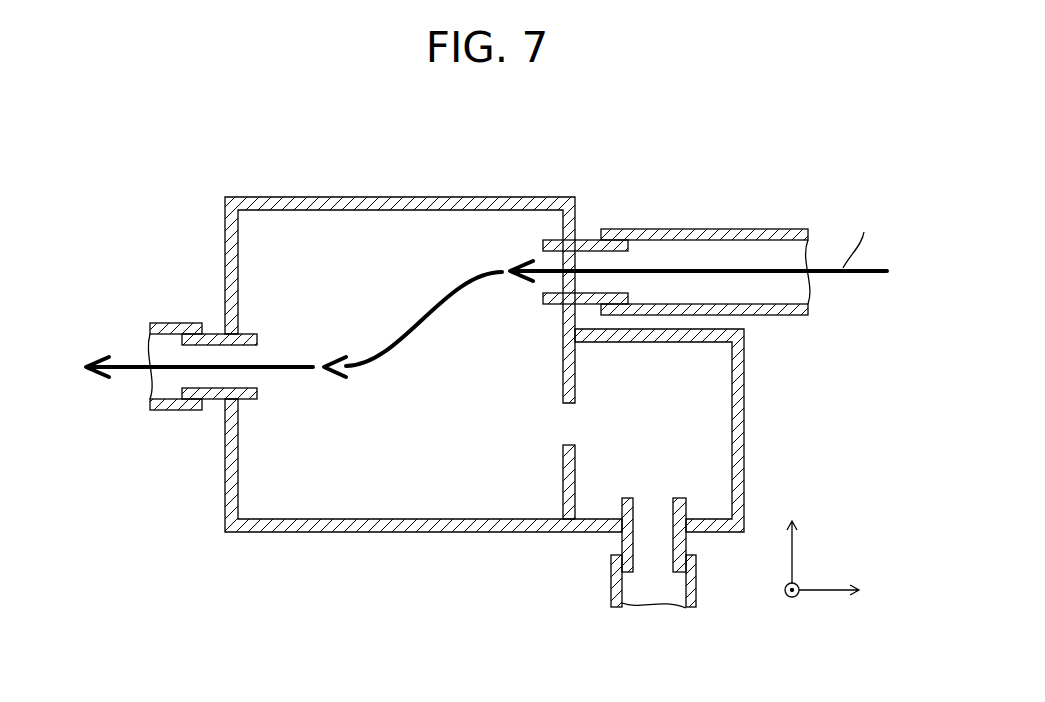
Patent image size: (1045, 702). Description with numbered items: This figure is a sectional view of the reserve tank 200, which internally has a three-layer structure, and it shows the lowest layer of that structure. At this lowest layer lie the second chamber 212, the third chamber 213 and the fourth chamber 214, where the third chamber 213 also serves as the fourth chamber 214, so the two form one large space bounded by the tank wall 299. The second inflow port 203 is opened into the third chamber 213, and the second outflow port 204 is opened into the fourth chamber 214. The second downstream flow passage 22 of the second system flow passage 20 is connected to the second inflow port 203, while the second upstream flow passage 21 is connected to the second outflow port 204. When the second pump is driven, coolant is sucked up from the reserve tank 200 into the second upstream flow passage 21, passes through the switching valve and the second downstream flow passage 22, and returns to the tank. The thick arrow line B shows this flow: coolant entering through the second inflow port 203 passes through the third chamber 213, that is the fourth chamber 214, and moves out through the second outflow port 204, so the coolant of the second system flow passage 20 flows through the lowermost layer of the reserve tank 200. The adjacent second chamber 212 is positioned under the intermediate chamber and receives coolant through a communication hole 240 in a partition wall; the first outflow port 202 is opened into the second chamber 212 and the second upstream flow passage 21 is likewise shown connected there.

The reserve tank 200 is at (176, 186).
The third chamber 213 is at (400, 278).
The fourth chamber 214 is at (318, 226).
The housing side wall 299 is at (225, 279).
The communication hole 240 is at (566, 440).
The second chamber 212 is at (715, 369).
The second outflow port 204 is at (212, 401).
The second inflow port 203 is at (588, 238).
The first outflow port 202 is at (619, 546).
The second system flow passage 20 is at (469, 403).
The second upstream flow passage 21 is at (173, 411).
The second downstream flow passage 22 is at (713, 228).